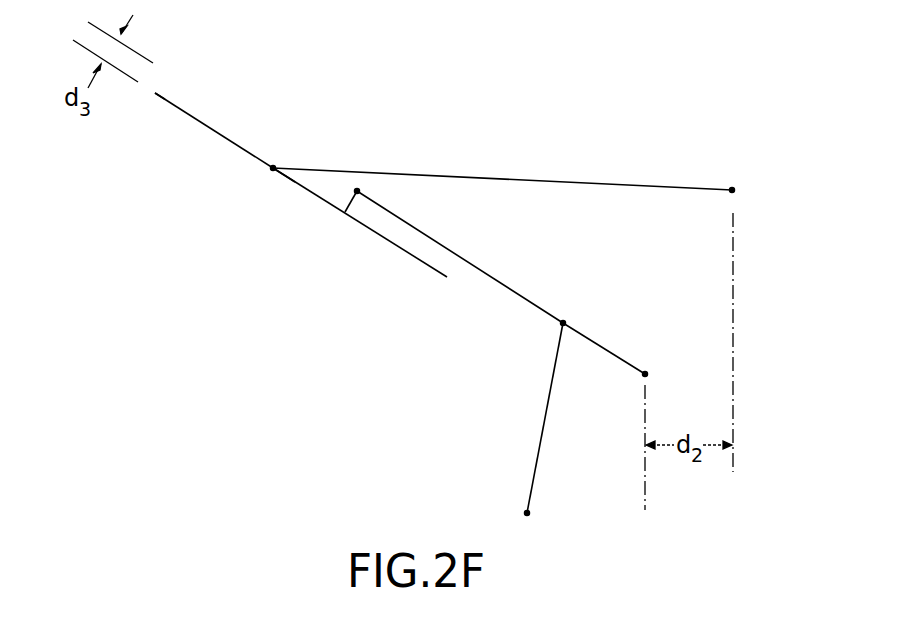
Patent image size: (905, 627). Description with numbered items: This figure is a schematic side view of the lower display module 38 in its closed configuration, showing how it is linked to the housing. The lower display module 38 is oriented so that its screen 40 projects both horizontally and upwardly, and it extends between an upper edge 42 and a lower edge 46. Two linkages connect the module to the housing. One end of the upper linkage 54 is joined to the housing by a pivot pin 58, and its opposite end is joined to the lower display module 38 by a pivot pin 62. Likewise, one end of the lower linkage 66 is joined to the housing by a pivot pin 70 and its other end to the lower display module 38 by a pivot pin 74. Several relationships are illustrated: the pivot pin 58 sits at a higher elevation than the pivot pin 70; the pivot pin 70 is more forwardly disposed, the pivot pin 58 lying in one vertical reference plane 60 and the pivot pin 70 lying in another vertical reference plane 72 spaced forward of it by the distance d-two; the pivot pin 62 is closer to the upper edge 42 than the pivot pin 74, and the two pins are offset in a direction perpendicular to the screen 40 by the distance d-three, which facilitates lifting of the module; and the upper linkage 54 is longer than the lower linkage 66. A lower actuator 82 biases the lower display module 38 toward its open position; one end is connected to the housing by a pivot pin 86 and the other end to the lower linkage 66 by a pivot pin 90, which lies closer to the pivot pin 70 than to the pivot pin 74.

The lower display module 38 is at (217, 132).
The screen 40 is at (285, 176).
The upper edge 42 is at (156, 93).
The lower edge 46 is at (447, 277).
The upper linkage 54 is at (470, 177).
The pivot pin 58 is at (734, 189).
The vertical reference plane 60 is at (734, 225).
The pivot pin 62 is at (276, 166).
The lower linkage 66 is at (515, 292).
The pivot pin 70 is at (643, 376).
The vertical reference plane 72 is at (644, 493).
The pivot pin 74 is at (358, 191).
The lower actuator 82 is at (538, 455).
The pivot pin 86 is at (525, 512).
The pivot pin 90 is at (566, 322).